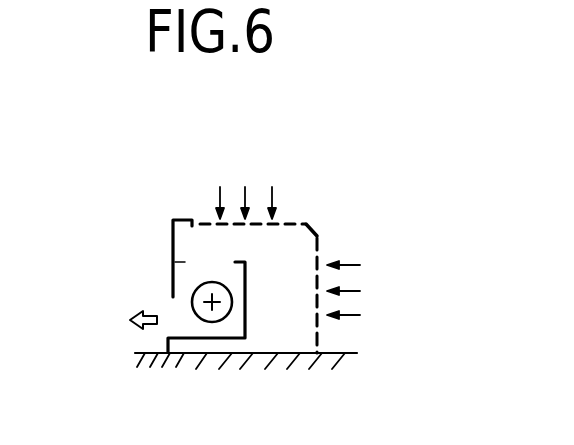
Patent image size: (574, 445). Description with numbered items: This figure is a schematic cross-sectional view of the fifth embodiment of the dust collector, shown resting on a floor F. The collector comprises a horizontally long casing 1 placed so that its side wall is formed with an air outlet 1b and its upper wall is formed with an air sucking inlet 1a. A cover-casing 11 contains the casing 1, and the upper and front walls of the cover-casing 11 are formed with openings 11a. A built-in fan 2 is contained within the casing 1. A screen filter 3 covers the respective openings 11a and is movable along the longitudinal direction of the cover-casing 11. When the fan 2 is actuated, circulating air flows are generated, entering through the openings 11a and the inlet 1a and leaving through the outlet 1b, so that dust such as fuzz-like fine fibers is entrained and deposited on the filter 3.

The casing 1 is at (245, 313).
The air sucking inlet 1a is at (210, 263).
The air outlet 1b is at (167, 305).
The built-in fan 2 is at (210, 322).
The screen filter 3 is at (252, 223).
The cover-casing 11 is at (170, 238).
The openings 11a is at (305, 280).
The floor F is at (333, 353).